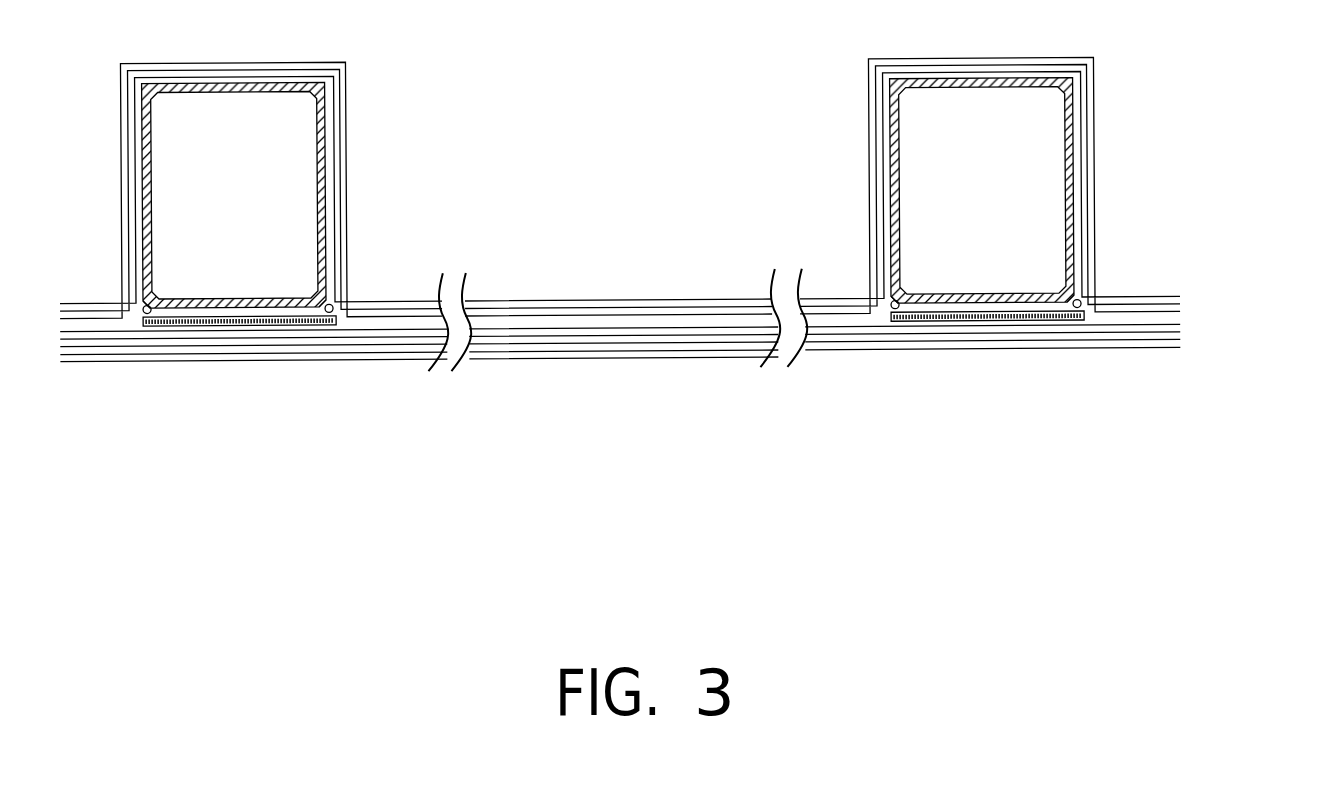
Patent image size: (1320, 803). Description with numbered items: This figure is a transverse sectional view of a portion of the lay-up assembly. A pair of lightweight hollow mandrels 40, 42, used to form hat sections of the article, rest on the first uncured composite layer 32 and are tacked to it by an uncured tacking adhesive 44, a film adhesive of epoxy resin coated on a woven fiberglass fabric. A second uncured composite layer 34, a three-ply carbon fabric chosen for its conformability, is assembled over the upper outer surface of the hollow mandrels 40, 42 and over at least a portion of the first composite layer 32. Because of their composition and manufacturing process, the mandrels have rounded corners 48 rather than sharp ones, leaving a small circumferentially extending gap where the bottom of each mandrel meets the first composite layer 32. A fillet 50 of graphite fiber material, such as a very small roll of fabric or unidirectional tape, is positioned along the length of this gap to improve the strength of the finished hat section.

The first uncured composite layer 32 is at (1188, 324).
The second uncured composite layer 34 is at (351, 183).
The hollow mandrel 40 is at (220, 89).
The hollow mandrel 42 is at (980, 89).
The uncured tacking adhesive 44 is at (260, 324).
The rounded corners 48 is at (152, 291).
The fillet 50 is at (333, 302).